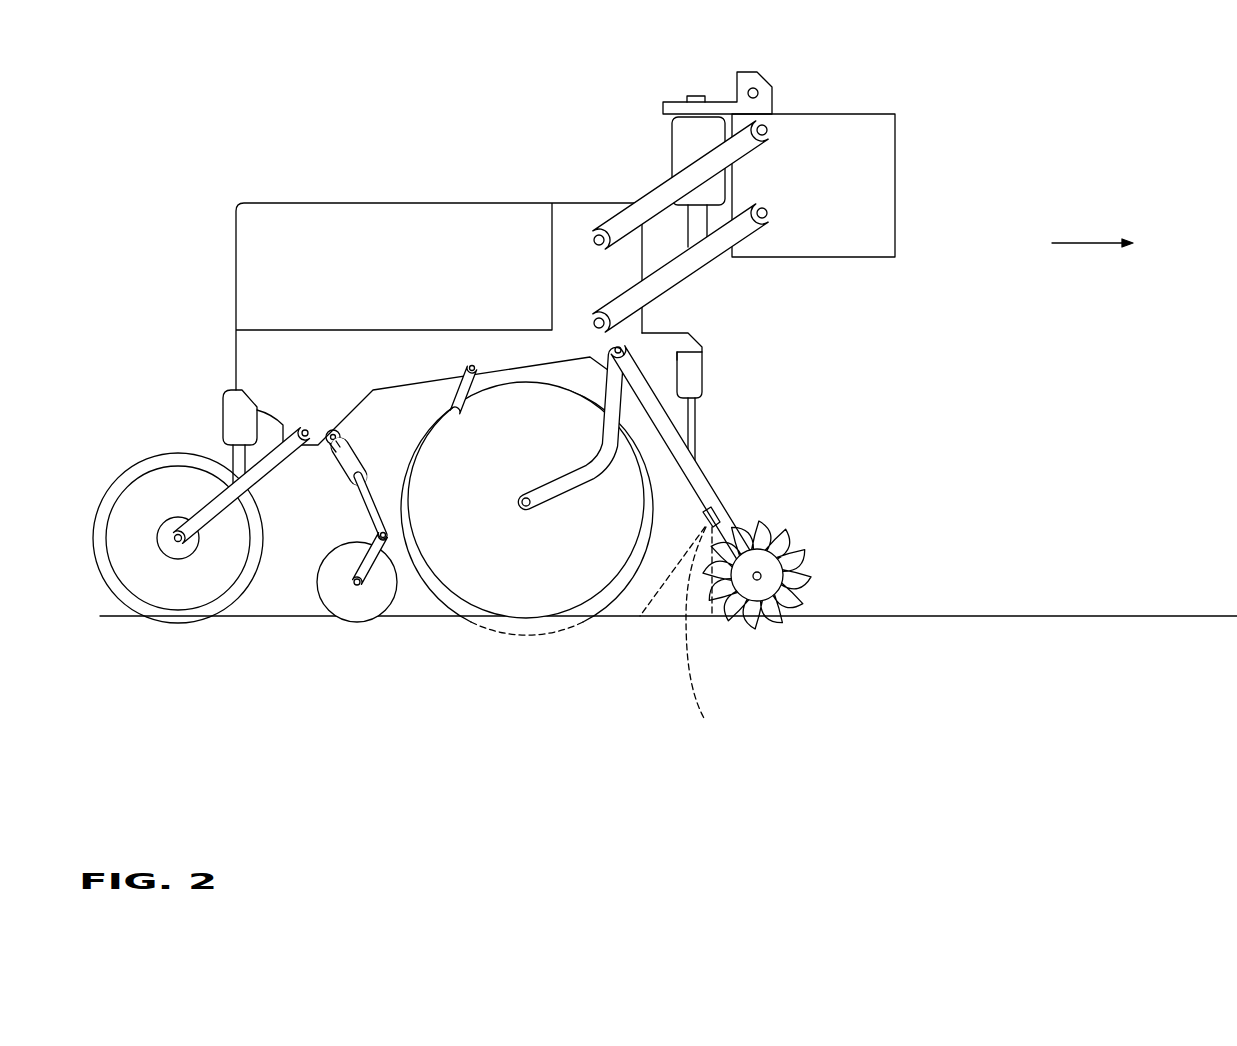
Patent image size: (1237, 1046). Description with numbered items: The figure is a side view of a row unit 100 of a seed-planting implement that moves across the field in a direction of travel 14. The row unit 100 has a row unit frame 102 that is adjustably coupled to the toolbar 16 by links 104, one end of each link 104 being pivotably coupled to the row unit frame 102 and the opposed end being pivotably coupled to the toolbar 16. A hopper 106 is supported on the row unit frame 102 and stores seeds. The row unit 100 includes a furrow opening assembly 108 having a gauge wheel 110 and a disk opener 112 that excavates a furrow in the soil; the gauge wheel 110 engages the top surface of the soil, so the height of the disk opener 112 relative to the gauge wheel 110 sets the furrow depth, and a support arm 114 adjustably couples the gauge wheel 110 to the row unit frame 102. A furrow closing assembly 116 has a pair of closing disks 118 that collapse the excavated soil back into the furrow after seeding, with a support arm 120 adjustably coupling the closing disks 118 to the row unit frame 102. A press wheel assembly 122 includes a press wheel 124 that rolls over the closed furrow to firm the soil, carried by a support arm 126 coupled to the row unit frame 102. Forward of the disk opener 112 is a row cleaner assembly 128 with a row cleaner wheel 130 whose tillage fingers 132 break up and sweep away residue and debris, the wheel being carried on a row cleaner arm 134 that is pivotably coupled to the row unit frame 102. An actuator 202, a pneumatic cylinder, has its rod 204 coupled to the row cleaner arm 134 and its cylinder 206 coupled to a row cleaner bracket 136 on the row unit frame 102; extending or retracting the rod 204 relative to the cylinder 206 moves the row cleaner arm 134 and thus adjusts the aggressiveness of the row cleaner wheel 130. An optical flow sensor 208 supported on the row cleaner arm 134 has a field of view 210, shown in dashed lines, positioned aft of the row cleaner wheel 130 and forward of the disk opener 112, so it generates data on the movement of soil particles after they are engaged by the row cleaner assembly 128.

The row unit 100 is at (298, 95).
The hopper 106 is at (372, 203).
The row unit frame 102 is at (612, 210).
The links 104 is at (745, 215).
The toolbar 16 is at (807, 258).
The row cleaner bracket 136 is at (670, 333).
The actuator 202 is at (706, 420).
The cylinder 206 is at (703, 387).
The rod 204 is at (697, 437).
The optical flow sensor 208 is at (703, 508).
The field of view 210 is at (713, 638).
The furrow opening assembly 108 is at (621, 602).
The disk openers 112 is at (478, 627).
The support arm 114 is at (562, 497).
The gauge wheel 110 is at (538, 382).
The support arm 120 is at (457, 382).
The row cleaner arm 134 is at (714, 490).
The row cleaner assembly 128 is at (788, 518).
The row cleaner wheel 130 is at (772, 563).
The fingers 132 is at (812, 583).
The press wheel assembly 122 is at (133, 444).
The press wheel 124 is at (93, 538).
The support arm 126 is at (202, 505).
The closing disks 118 is at (318, 578).
The furrow closing assembly 116 is at (328, 617).
The direction of travel 14 is at (1088, 243).